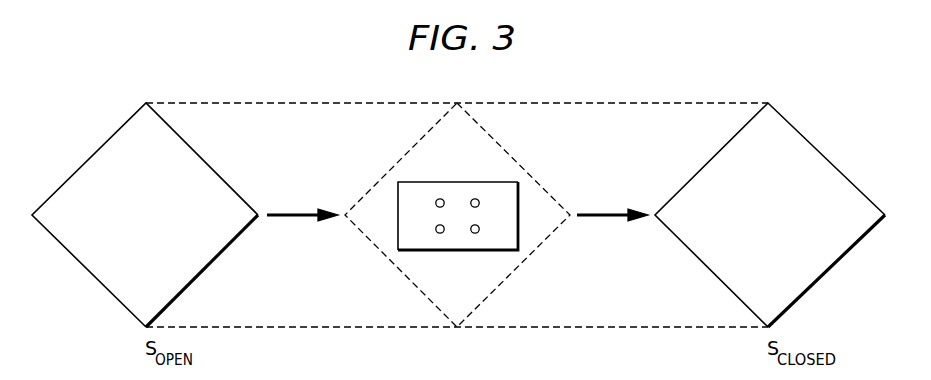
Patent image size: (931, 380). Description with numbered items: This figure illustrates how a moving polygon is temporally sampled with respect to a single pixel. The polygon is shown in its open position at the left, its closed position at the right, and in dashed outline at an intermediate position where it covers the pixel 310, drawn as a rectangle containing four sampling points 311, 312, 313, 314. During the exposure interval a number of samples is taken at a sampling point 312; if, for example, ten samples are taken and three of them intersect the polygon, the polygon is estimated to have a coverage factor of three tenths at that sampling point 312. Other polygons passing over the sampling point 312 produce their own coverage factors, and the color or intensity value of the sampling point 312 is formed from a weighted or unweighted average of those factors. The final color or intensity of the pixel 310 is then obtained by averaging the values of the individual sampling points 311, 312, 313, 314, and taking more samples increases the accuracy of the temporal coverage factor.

The pixel 310 is at (519, 233).
The sampling point 311 is at (442, 198).
The sampling point 312 is at (435, 229).
The sampling point 313 is at (480, 205).
The sampling point 314 is at (472, 234).